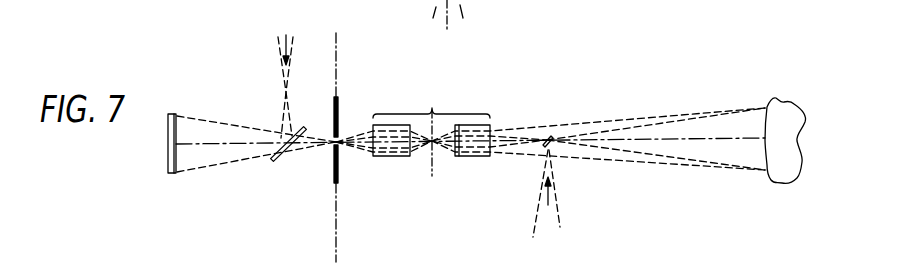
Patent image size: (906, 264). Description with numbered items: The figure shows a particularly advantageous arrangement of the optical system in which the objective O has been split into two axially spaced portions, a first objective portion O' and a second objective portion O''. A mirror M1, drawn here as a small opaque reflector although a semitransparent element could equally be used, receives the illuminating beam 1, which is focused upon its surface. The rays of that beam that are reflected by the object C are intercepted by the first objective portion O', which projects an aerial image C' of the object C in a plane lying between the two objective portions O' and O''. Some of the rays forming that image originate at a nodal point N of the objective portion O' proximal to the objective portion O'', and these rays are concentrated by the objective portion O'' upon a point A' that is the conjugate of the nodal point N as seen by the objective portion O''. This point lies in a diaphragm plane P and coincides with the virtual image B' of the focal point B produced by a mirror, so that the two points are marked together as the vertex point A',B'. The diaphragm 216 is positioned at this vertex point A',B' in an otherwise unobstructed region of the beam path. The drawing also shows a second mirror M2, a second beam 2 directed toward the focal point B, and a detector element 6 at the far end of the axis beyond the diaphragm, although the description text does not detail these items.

The detector 6 is at (177, 124).
The light beam 2 is at (285, 45).
The focal point B is at (291, 86).
The diaphragm plane P is at (337, 50).
The diaphragm 216 is at (339, 104).
The second mirror M2 is at (273, 160).
The vertex point A',B' is at (310, 167).
The second objective portion O'' is at (392, 164).
The aerial image C' is at (435, 156).
The objective O is at (431, 98).
The first objective portion O' is at (475, 164).
The nodal point N is at (470, 138).
The mirror M1 is at (556, 102).
The illuminating beam 1 is at (551, 201).
The object C is at (797, 151).